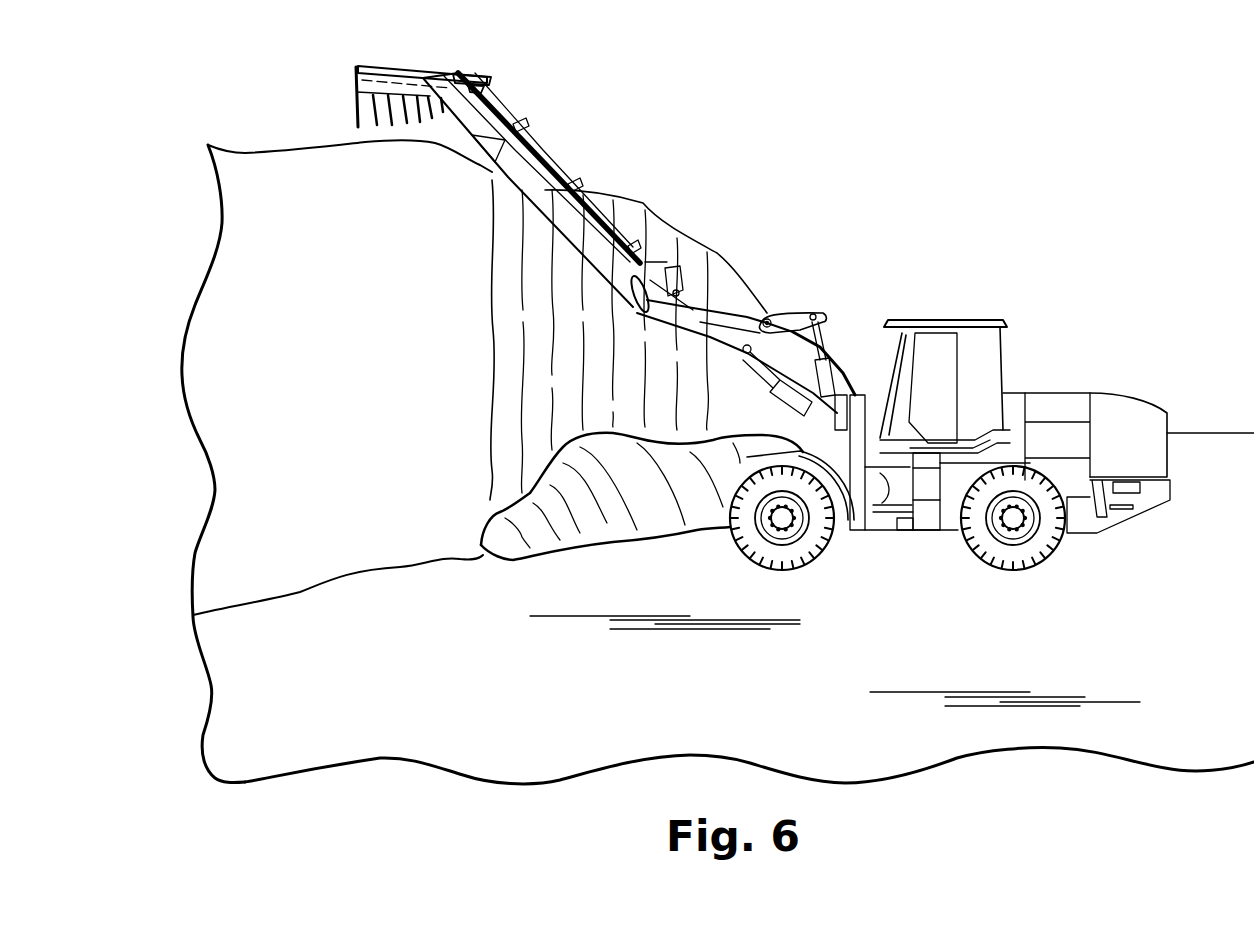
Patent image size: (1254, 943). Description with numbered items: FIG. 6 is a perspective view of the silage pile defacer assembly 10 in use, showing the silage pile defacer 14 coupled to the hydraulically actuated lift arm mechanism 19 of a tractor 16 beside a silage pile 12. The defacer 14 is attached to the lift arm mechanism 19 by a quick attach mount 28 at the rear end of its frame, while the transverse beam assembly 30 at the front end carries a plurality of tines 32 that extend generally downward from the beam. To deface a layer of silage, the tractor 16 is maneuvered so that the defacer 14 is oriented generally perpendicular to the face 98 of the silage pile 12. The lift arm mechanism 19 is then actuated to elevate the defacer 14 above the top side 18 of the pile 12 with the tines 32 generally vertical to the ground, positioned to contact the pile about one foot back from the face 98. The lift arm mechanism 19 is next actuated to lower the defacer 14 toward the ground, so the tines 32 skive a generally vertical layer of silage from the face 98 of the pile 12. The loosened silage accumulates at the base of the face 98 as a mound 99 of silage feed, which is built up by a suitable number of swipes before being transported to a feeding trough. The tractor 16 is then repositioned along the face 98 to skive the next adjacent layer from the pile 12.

The silage pile defacer assembly 10 is at (774, 290).
The silage pile 12 is at (290, 177).
The silage pile defacer 14 is at (494, 162).
The tractor 16 is at (984, 316).
The top side of the silage pile 18 is at (240, 150).
The lift arm mechanism 19 is at (734, 314).
The quick attach mount 28 is at (654, 276).
The transverse beam assembly 30 is at (358, 61).
The tines 32 is at (354, 101).
The face of the silage pile 98 is at (422, 321).
The mound of silage feed 99 is at (662, 510).